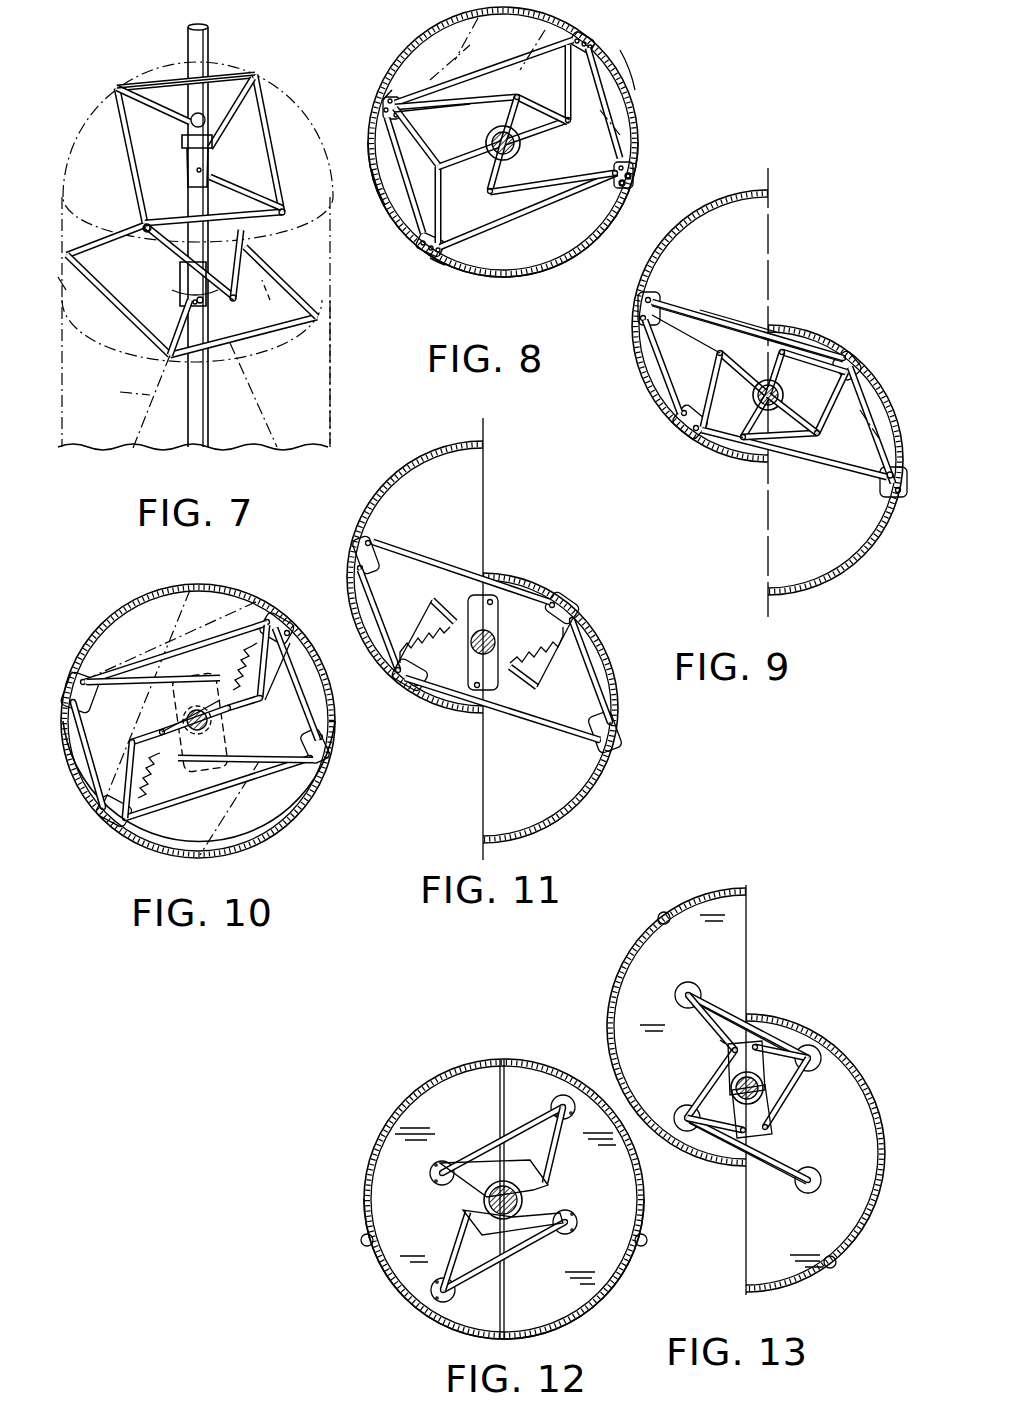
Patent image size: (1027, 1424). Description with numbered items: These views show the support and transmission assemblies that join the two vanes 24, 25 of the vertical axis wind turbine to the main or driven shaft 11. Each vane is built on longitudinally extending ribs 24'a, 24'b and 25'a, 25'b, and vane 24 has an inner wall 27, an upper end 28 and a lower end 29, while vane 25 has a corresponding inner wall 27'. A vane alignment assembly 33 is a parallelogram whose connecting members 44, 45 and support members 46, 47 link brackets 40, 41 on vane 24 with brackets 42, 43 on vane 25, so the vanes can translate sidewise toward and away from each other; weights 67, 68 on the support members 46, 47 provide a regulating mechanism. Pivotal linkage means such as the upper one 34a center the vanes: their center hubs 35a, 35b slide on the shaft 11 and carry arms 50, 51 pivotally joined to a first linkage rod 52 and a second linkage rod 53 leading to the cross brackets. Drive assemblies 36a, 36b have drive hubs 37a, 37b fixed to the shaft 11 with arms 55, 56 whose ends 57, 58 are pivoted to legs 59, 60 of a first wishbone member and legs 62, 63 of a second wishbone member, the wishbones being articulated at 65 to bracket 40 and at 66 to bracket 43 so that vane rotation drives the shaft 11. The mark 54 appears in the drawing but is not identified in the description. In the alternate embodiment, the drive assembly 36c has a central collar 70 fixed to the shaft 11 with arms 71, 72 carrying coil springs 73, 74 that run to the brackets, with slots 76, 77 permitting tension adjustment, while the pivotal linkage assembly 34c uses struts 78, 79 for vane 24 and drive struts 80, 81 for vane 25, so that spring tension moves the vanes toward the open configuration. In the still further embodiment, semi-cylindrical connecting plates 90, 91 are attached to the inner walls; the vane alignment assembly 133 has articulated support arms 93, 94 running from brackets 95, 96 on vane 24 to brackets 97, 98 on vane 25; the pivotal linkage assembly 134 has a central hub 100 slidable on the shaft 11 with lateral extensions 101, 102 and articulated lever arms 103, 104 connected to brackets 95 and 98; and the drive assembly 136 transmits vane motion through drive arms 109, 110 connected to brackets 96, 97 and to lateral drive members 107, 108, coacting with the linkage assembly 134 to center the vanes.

In FIG. 7, the main shaft 11 is at (190, 50).
In FIG. 8, the main shaft 11 is at (518, 148).
In FIG. 9, the main shaft 11 is at (780, 395).
In FIG. 10, the main shaft 11 is at (210, 724).
In FIG. 11, the main shaft 11 is at (483, 642).
In FIG. 12, the main shaft 11 is at (480, 1204).
In FIG. 13, the main shaft 11 is at (738, 1094).
In FIG. 7, the vane 24 is at (195, 256).
In FIG. 8, the vane 24 is at (495, 138).
In FIG. 9, the vane 24 is at (700, 295).
In FIG. 10, the vane 24 is at (190, 711).
In FIG. 11, the vane 24 is at (415, 555).
In FIG. 12, the vane 24 is at (504, 1187).
In FIG. 13, the vane 24 is at (676, 1016).
In FIG. 7, the rib 24'a is at (114, 391).
In FIG. 8, the rib 24'a is at (357, 78).
In FIG. 8, the rib 24'b is at (459, 287).
In FIG. 7, the vane 25 is at (338, 373).
In FIG. 8, the vane 25 is at (503, 236).
In FIG. 9, the vane 25 is at (835, 474).
In FIG. 10, the vane 25 is at (199, 795).
In FIG. 11, the vane 25 is at (567, 708).
In FIG. 12, the vane 25 is at (519, 1269).
In FIG. 13, the vane 25 is at (838, 1153).
In FIG. 8, the rib 25'a is at (616, 33).
In FIG. 8, the rib 25'b is at (658, 183).
In FIG. 12, the inner wall 27 is at (493, 1246).
In FIG. 13, the inner wall 27 is at (638, 908).
In FIG. 13, the inner wall 27' is at (859, 1264).
In FIG. 8, the upper end 28 is at (380, 205).
In FIG. 8, the lower end 29 is at (630, 62).
In FIG. 7, the vane alignment assembly 33 is at (263, 80).
In FIG. 8, the vane alignment assembly 33 is at (470, 50).
In FIG. 9, the vane alignment assembly 33 is at (725, 292).
In FIG. 7, the upper pivotal linkage means 34a is at (252, 162).
In FIG. 8, the upper pivotal linkage means 34a is at (560, 56).
In FIG. 9, the upper pivotal linkage means 34a is at (826, 405).
In FIG. 10, the pivotal linkage assembly 34c is at (216, 768).
In FIG. 11, the pivotal linkage assembly 34c is at (502, 610).
In FIG. 7, the center hub 35a is at (182, 150).
In FIG. 8, the center hub 35b is at (531, 182).
In FIG. 9, the center hub 35b is at (760, 422).
In FIG. 7, the drive assembly 36a is at (246, 252).
In FIG. 8, the drive assembly 36b is at (623, 138).
In FIG. 9, the drive assembly 36b is at (871, 410).
In FIG. 10, the drive assembly 36c is at (252, 728).
In FIG. 11, the drive assembly 36c is at (545, 680).
In FIG. 7, the drive hub 37a is at (185, 303).
In FIG. 8, the drive hub 37b is at (482, 128).
In FIG. 9, the drive hub 37b is at (775, 372).
In FIG. 8, the bracket 40 is at (396, 100).
In FIG. 9, the bracket 40 is at (656, 295).
In FIG. 8, the bracket 41 is at (428, 255).
In FIG. 9, the bracket 41 is at (691, 408).
In FIG. 10, the bracket 41 is at (100, 823).
In FIG. 8, the bracket 42 is at (572, 92).
In FIG. 9, the bracket 42 is at (849, 350).
In FIG. 8, the bracket 43 is at (625, 195).
In FIG. 9, the bracket 43 is at (900, 497).
In FIG. 10, the bracket 43 is at (279, 620).
In FIG. 7, the connecting member 44 is at (214, 85).
In FIG. 8, the connecting member 44 is at (516, 60).
In FIG. 9, the connecting member 44 is at (742, 312).
In FIG. 7, the connecting member 45 is at (256, 216).
In FIG. 8, the connecting member 45 is at (504, 224).
In FIG. 9, the connecting member 45 is at (815, 482).
In FIG. 7, the support member 46 is at (130, 175).
In FIG. 8, the support member 46 is at (382, 163).
In FIG. 9, the support member 46 is at (641, 375).
In FIG. 7, the support member 47 is at (283, 165).
In FIG. 8, the support member 47 is at (624, 106).
In FIG. 9, the support member 47 is at (871, 380).
In FIG. 7, the arm 50 is at (203, 118).
In FIG. 8, the arm 50 is at (556, 135).
In FIG. 9, the arm 50 is at (810, 445).
In FIG. 7, the arm 51 is at (226, 160).
In FIG. 8, the arm 51 is at (468, 172).
In FIG. 9, the arm 51 is at (750, 332).
In FIG. 7, the first linkage rod 52 is at (185, 118).
In FIG. 8, the first linkage rod 52 is at (571, 106).
In FIG. 9, the first linkage rod 52 is at (822, 436).
In FIG. 7, the second linkage rod 53 is at (284, 206).
In FIG. 8, the second linkage rod 53 is at (436, 196).
In FIG. 9, the second linkage rod 53 is at (715, 362).
In FIG. 8, the rotation direction 54 is at (468, 95).
In FIG. 8, the arm 55 is at (506, 108).
In FIG. 9, the arm 55 is at (790, 342).
In FIG. 7, the arm 56 is at (200, 302).
In FIG. 8, the arm 56 is at (492, 195).
In FIG. 9, the arm 56 is at (750, 412).
In FIG. 7, the pivotal connection 57 is at (176, 265).
In FIG. 8, the pivotal connection 57 is at (519, 93).
In FIG. 7, the pivotal connection 58 is at (145, 240).
In FIG. 8, the pivotal connection 58 is at (488, 198).
In FIG. 7, the leg 59 is at (237, 228).
In FIG. 8, the leg 59 is at (570, 180).
In FIG. 7, the leg 60 is at (236, 110).
In FIG. 8, the leg 60 is at (535, 110).
In FIG. 7, the leg 62 is at (180, 290).
In FIG. 8, the leg 62 is at (425, 143).
In FIG. 9, the leg 62 is at (686, 334).
In FIG. 7, the leg 63 is at (146, 239).
In FIG. 8, the leg 63 is at (513, 95).
In FIG. 8, the pivotal connection 65 is at (420, 103).
In FIG. 9, the pivotal connection 65 is at (680, 304).
In FIG. 8, the pivotal connection 66 is at (640, 152).
In FIG. 9, the pivotal connection 66 is at (862, 490).
In FIG. 7, the weight 67 is at (58, 277).
In FIG. 7, the weight 68 is at (272, 302).
In FIG. 10, the central collar 70 is at (222, 722).
In FIG. 10, the arm 71 is at (266, 698).
In FIG. 10, the arm 72 is at (128, 742).
In FIG. 10, the coil spring 73 is at (238, 676).
In FIG. 10, the coil spring 74 is at (295, 652).
In FIG. 10, the slot 76 is at (242, 710).
In FIG. 10, the slot 77 is at (160, 762).
In FIG. 10, the strut 78 is at (160, 676).
In FIG. 10, the strut 79 is at (156, 727).
In FIG. 10, the drive strut 80 is at (270, 763).
In FIG. 10, the drive strut 81 is at (300, 690).
In FIG. 12, the connecting plate 90 is at (396, 1160).
In FIG. 13, the connecting plate 90 is at (760, 928).
In FIG. 12, the connecting plate 91 is at (636, 1154).
In FIG. 13, the connecting plate 91 is at (762, 1240).
In FIG. 12, the articulated support arm 93 is at (496, 1142).
In FIG. 13, the articulated support arm 93 is at (752, 992).
In FIG. 12, the articulated support arm 94 is at (519, 1250).
In FIG. 13, the articulated support arm 94 is at (764, 1165).
In FIG. 12, the bracket 95 is at (432, 1180).
In FIG. 13, the bracket 95 is at (687, 982).
In FIG. 12, the bracket 96 is at (430, 1292).
In FIG. 13, the bracket 96 is at (687, 1133).
In FIG. 12, the bracket 97 is at (563, 1094).
In FIG. 13, the bracket 97 is at (822, 1050).
In FIG. 12, the bracket 98 is at (578, 1212).
In FIG. 13, the central hub 100 is at (764, 1082).
In FIG. 13, the lateral extension 101 is at (768, 1032).
In FIG. 13, the lateral extension 102 is at (731, 1141).
In FIG. 13, the articulated lever arm 103 is at (729, 1012).
In FIG. 13, the articulated lever arm 104 is at (822, 1173).
In FIG. 13, the lateral drive member 107 is at (726, 1053).
In FIG. 13, the lateral drive member 108 is at (776, 1100).
In FIG. 13, the drive arm 109 is at (705, 1089).
In FIG. 13, the drive arm 110 is at (796, 1081).
In FIG. 13, the vane alignment assembly 133 is at (792, 1026).
In FIG. 13, the pivotal linkage assembly 134 is at (792, 1152).
In FIG. 13, the drive assembly 136 is at (718, 1040).